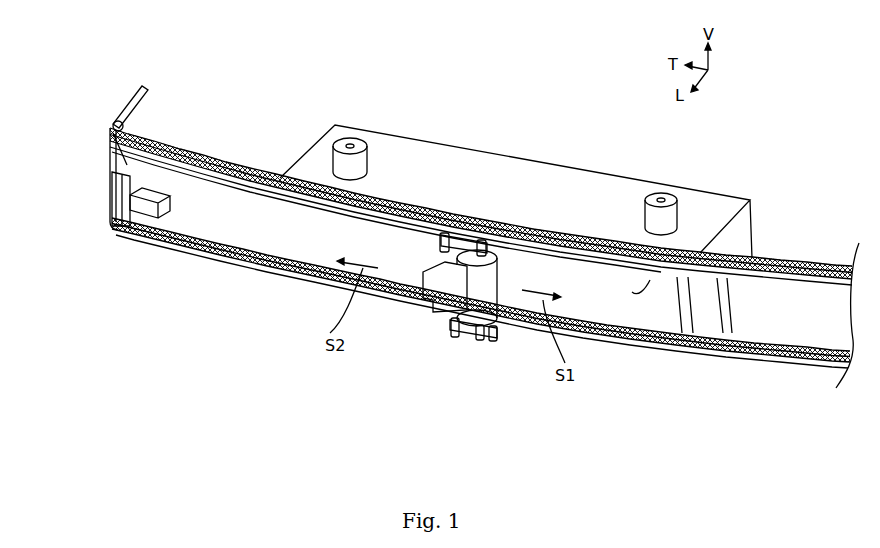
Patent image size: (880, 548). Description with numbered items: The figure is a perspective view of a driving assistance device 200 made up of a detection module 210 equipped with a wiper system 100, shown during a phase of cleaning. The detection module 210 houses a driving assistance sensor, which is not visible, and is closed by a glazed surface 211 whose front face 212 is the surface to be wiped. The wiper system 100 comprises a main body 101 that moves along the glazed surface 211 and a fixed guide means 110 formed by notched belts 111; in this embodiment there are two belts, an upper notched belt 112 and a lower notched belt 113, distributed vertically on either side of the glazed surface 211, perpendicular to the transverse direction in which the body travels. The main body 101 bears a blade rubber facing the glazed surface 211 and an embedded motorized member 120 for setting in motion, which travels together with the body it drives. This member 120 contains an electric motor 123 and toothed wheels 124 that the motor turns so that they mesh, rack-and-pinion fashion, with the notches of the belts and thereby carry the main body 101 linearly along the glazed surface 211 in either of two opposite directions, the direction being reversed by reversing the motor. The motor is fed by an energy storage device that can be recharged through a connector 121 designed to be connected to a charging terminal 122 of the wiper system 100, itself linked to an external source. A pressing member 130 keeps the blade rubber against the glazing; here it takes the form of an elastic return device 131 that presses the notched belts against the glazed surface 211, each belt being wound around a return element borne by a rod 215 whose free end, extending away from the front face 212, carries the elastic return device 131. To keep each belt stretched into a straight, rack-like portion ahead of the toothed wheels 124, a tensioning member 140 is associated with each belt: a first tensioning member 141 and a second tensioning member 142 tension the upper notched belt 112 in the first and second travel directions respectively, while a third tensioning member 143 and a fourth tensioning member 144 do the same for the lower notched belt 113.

The wiper system 100 is at (442, 234).
The main body 101 is at (479, 330).
The fixed guide means 110 is at (484, 274).
The notched belt 111 is at (481, 191).
The upper notched belt 112 is at (265, 185).
The lower notched belt 113 is at (668, 358).
The embedded motorized member for setting in motion 120 is at (510, 256).
The connector 121 is at (440, 300).
The charging terminal 122 is at (155, 190).
The electric motor 123 is at (505, 235).
The toothed wheel 124 is at (468, 233).
The pressing member 130 is at (115, 72).
The elastic return device 131 is at (143, 82).
The tensioning member 140 is at (510, 256).
The first tensioning member 141 is at (485, 245).
The second tensioning member 142 is at (438, 245).
The third tensioning member 143 is at (493, 335).
The fourth tensioning member 144 is at (453, 332).
The driving assistance device 200 is at (531, 212).
The detection module 210 is at (730, 200).
The glazed surface 211 is at (625, 318).
The front face 212 is at (650, 280).
The rod 215 is at (108, 128).